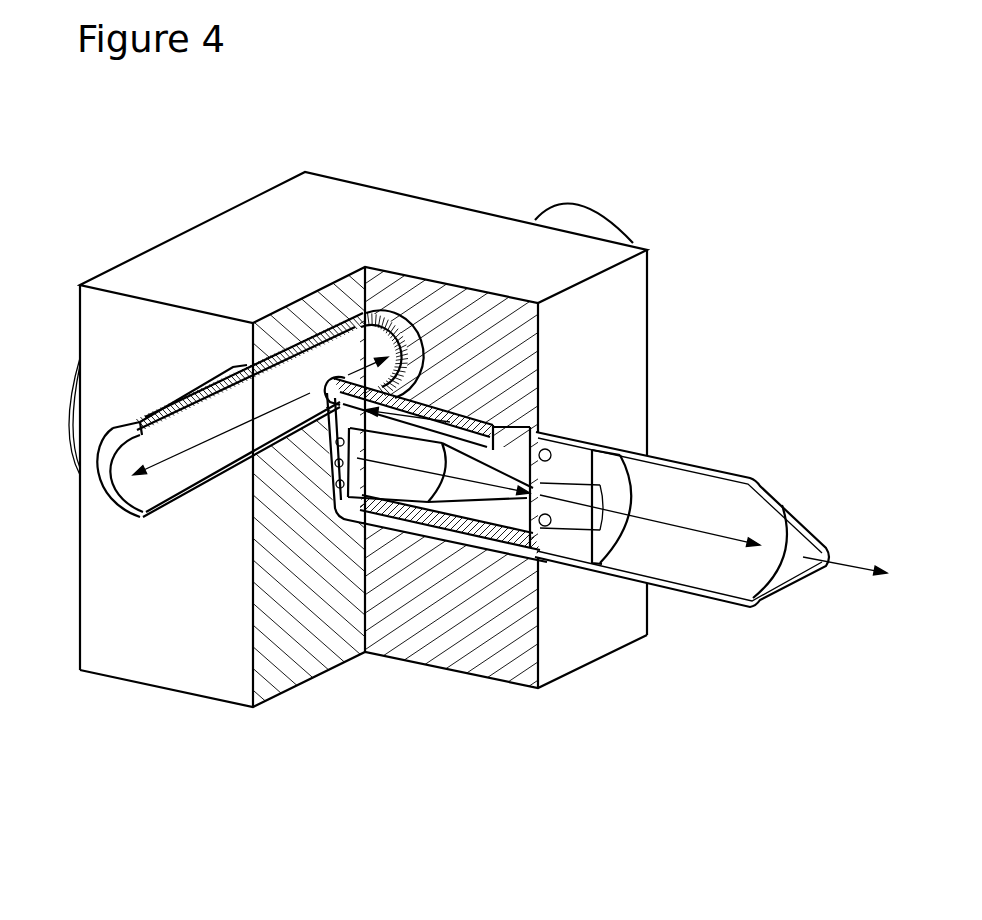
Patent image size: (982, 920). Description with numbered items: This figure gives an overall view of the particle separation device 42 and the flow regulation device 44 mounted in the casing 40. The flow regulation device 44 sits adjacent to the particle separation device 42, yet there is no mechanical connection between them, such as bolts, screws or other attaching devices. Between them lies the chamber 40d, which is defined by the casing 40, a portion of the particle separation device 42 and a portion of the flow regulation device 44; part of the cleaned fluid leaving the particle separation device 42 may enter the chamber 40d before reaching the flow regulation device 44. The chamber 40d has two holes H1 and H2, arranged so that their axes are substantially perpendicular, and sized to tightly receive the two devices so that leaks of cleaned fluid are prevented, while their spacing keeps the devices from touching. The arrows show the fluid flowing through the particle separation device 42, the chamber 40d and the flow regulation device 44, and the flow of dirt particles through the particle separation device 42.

The casing 40 is at (373, 220).
The chamber 40d is at (328, 455).
The particle separation device 42 is at (773, 500).
The flow regulation device 44 is at (120, 435).
The hole H1 is at (308, 312).
The hole H2 is at (503, 547).